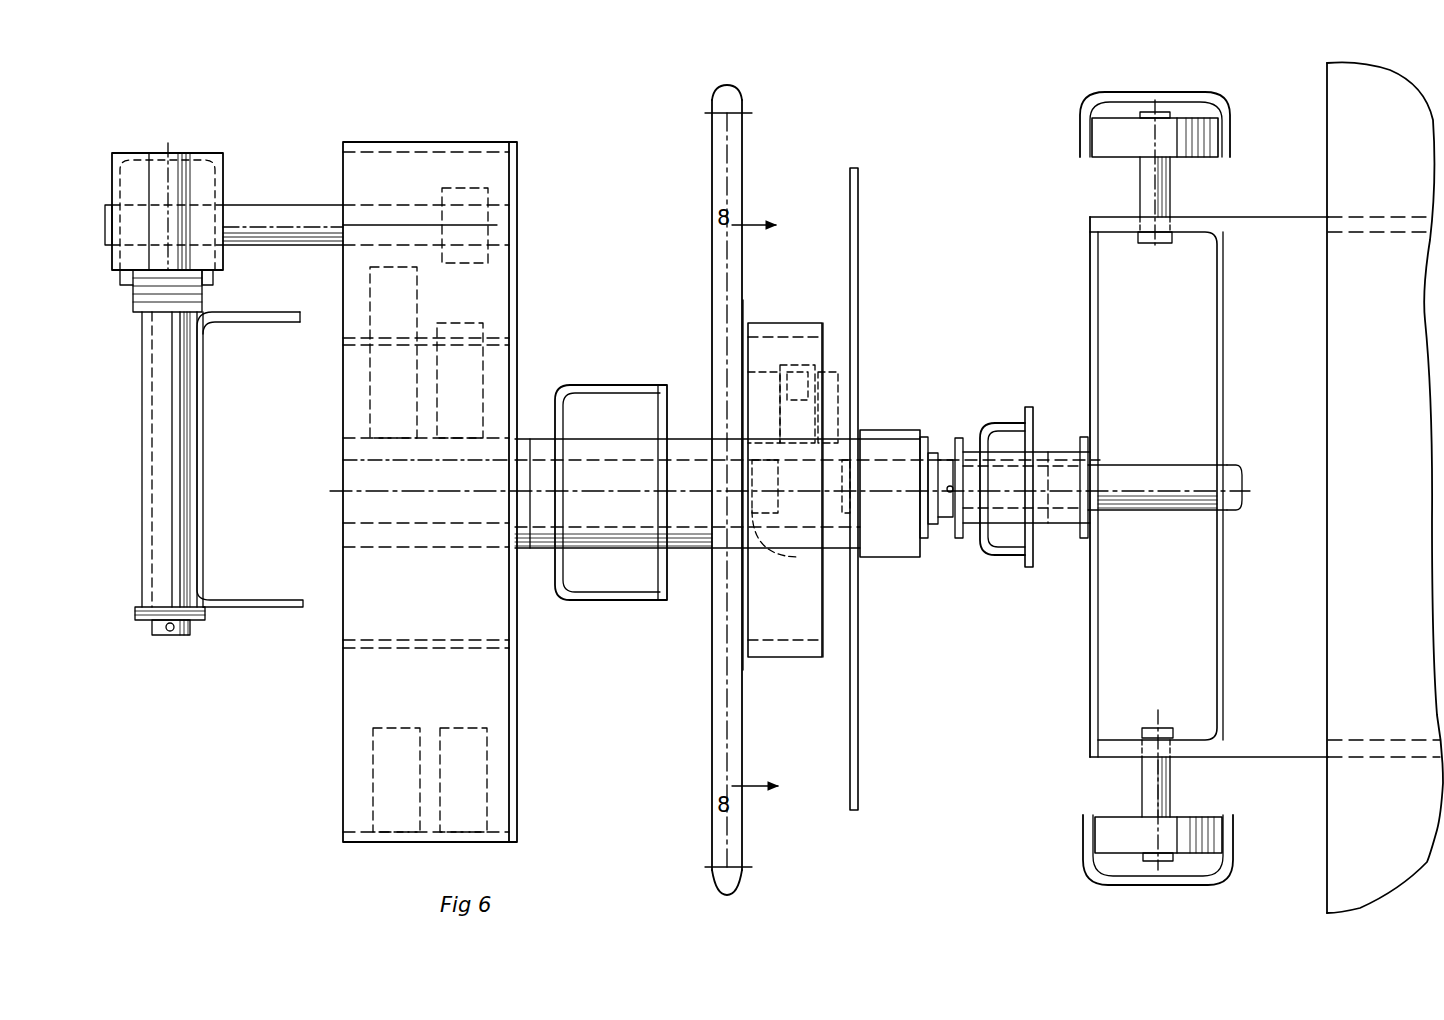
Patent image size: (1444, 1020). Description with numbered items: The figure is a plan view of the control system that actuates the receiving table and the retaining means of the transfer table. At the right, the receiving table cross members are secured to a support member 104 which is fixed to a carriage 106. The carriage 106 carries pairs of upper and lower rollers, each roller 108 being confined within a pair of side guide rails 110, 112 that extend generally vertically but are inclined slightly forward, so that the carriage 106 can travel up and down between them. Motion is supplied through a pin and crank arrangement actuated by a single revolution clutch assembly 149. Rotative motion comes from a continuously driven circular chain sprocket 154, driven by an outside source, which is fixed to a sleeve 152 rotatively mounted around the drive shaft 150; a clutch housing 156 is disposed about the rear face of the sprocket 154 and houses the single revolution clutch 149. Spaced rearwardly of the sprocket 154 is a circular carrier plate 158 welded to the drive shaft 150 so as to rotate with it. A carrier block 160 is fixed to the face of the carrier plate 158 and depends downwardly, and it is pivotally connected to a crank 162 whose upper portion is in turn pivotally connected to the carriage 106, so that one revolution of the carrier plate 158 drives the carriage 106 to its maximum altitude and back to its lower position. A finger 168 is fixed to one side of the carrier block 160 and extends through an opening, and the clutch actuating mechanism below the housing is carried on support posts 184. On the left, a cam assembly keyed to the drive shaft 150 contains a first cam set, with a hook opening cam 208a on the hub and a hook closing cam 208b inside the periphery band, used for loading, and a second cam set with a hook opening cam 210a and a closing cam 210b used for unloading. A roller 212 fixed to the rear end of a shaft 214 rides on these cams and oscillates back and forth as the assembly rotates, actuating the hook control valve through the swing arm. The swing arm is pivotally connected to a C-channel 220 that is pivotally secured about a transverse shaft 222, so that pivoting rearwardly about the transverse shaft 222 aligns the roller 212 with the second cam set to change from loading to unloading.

The support member 104 is at (1343, 487).
The carriage 106 is at (1224, 392).
The roller 108 is at (1190, 160).
The side guide rail 110 is at (1188, 883).
The side guide rail 112 is at (1225, 102).
The single revolution clutch assembly 149 is at (836, 358).
The drive shaft 150 is at (692, 512).
The sleeve 152 is at (757, 445).
The circular chain sprocket 154 is at (742, 142).
The clutch housing 156 is at (763, 323).
The circular carrier plate 158 is at (858, 240).
The carrier block 160 is at (877, 432).
The crank 162 is at (990, 423).
The finger 168 is at (880, 557).
The support posts 184 is at (572, 385).
The hook opening cam 208a is at (482, 330).
The hook closing cam 208b is at (482, 745).
The hook opening cam 210a is at (378, 737).
The closing cam 210b is at (370, 285).
The roller 212 is at (478, 190).
The shaft 214 is at (266, 215).
The C-channel 220 is at (223, 170).
The transverse shaft 222 is at (160, 637).